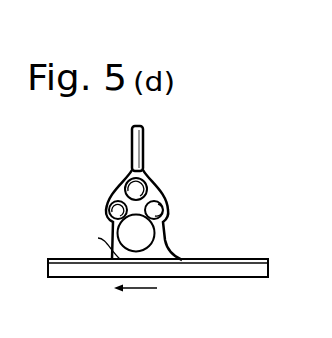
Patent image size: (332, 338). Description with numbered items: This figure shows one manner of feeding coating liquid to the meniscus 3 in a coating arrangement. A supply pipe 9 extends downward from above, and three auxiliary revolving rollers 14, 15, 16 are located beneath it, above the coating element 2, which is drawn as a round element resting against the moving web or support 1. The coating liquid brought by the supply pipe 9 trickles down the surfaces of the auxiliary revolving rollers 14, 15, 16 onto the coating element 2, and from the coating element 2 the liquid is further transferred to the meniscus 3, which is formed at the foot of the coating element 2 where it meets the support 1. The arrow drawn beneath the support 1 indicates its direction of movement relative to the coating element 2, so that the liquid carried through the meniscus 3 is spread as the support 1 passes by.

The base plate / sheet 1 is at (222, 277).
The coating element 2 is at (148, 233).
The meniscus 3 is at (100, 243).
The supply pipe 9 is at (141, 145).
The auxiliary revolving roller 14 is at (128, 187).
The auxiliary revolving roller 15 is at (109, 211).
The auxiliary revolving roller 16 is at (172, 209).